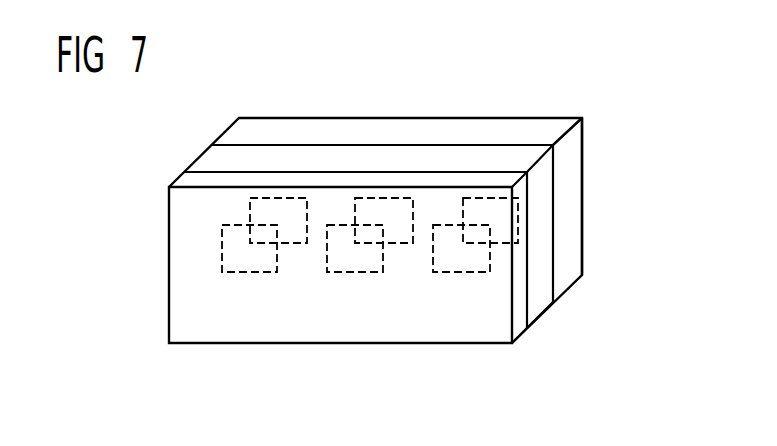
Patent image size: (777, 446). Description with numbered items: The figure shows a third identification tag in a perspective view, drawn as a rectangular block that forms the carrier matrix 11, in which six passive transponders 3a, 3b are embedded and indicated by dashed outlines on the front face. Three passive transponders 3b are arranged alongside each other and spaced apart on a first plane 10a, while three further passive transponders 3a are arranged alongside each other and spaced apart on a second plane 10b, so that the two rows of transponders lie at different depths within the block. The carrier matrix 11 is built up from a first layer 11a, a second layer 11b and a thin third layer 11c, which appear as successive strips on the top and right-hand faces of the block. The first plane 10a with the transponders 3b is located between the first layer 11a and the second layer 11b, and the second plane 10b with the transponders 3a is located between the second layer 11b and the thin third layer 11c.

The carrier matrix 11 is at (502, 117).
The first layer 11a is at (570, 148).
The second layer 11b is at (540, 242).
The third layer 11c is at (517, 311).
The first plane 10a is at (555, 190).
The second plane 10b is at (526, 285).
The passive transponders 3a is at (237, 260).
The passive transponders 3b is at (293, 228).